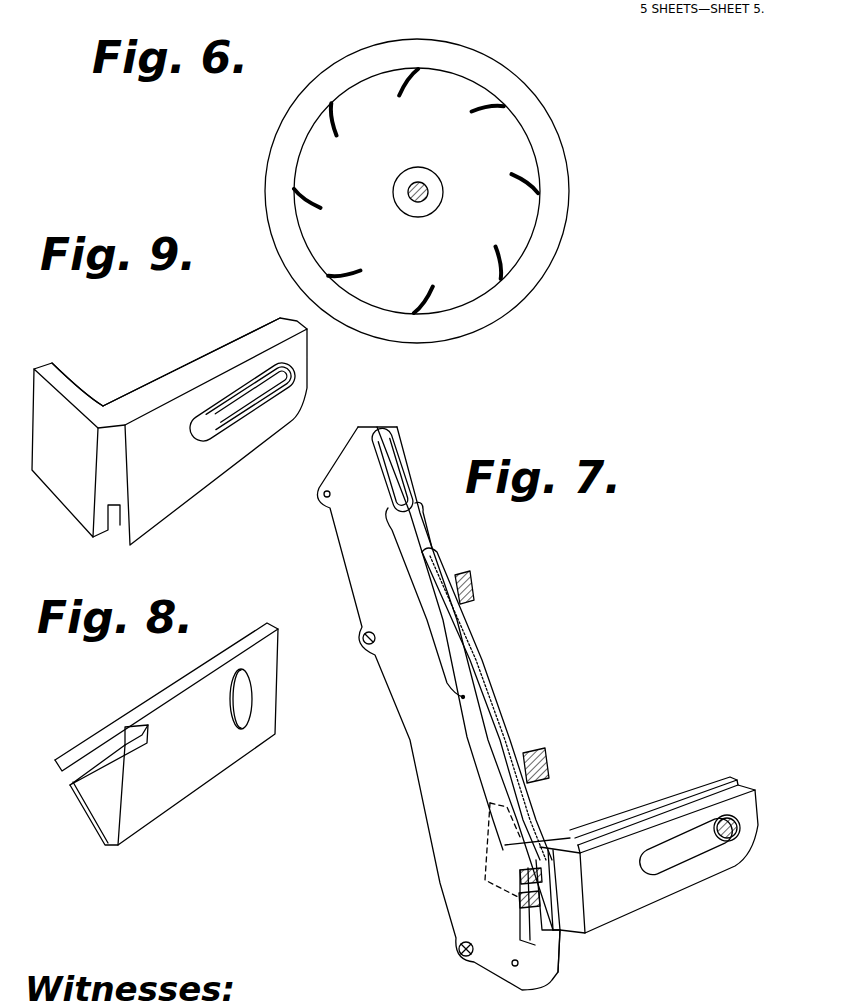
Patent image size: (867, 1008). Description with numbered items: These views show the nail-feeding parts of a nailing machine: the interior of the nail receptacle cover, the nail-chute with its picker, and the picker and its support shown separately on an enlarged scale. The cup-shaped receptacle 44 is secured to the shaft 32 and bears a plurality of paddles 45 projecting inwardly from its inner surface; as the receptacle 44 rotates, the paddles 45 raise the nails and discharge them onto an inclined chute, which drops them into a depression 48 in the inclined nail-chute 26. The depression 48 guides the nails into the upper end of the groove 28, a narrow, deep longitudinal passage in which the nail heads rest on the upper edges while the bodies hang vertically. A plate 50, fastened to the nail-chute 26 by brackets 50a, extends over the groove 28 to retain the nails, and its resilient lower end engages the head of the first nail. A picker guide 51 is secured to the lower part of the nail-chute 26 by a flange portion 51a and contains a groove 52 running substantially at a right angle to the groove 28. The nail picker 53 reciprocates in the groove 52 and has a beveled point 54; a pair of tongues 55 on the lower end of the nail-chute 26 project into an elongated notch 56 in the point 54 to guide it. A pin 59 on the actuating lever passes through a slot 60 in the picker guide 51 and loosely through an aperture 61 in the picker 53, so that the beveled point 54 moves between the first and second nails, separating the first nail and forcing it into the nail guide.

In FIG. 7, the nail-chute 26 is at (438, 708).
In FIG. 7, the groove 28 is at (418, 530).
In FIG. 6, the shaft 32 is at (428, 191).
In FIG. 6, the cup-shaped receptacle 44 is at (557, 167).
In FIG. 6, the paddles 45 is at (473, 110).
In FIG. 7, the depression 48 is at (403, 490).
In FIG. 7, the plate 50 is at (490, 677).
In FIG. 7, the brackets 50a is at (470, 587).
In FIG. 9, the picker guide 51 is at (200, 431).
In FIG. 7, the picker guide 51 is at (668, 859).
In FIG. 9, the flange portion 51a is at (67, 450).
In FIG. 9, the groove 52 is at (230, 357).
In FIG. 7, the groove 52 is at (742, 783).
In FIG. 8, the nail picker 53 is at (166, 734).
In FIG. 7, the nail picker 53 is at (680, 850).
In FIG. 8, the beveled point 54 is at (78, 755).
In FIG. 7, the beveled point 54 is at (567, 863).
In FIG. 7, the tongues 55 is at (527, 884).
In FIG. 8, the elongated notch 56 is at (102, 755).
In FIG. 7, the elongated notch 56 is at (568, 870).
In FIG. 7, the pin 59 is at (728, 847).
In FIG. 9, the slot 60 is at (232, 427).
In FIG. 7, the slot 60 is at (703, 853).
In FIG. 8, the aperture 61 is at (246, 705).